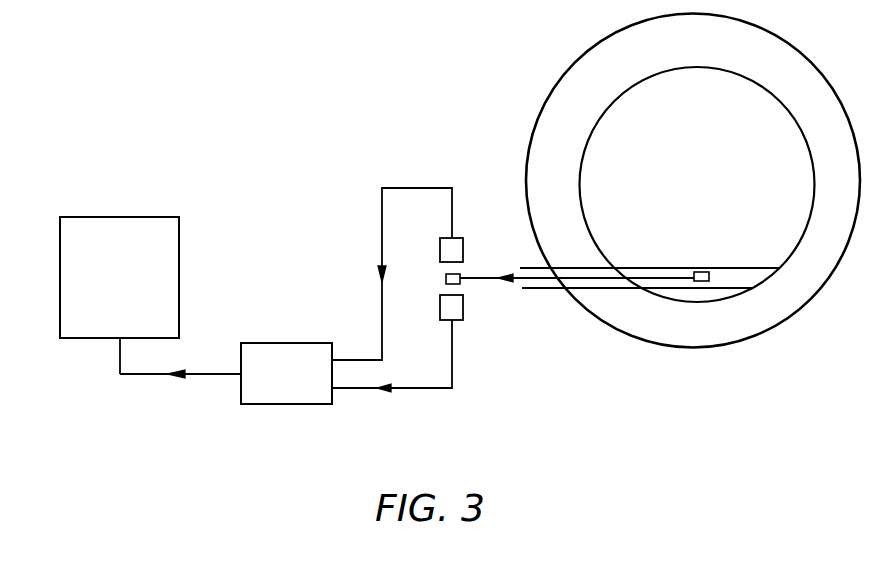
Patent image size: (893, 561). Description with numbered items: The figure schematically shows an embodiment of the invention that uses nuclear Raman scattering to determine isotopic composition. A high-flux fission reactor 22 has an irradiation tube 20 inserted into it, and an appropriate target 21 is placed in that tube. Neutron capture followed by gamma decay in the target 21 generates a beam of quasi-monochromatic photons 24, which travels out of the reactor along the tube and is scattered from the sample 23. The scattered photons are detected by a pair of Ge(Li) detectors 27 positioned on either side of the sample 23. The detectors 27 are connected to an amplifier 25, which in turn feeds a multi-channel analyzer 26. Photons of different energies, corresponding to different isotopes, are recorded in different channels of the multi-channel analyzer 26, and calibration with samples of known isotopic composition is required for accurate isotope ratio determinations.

The irradiation tube 20 is at (528, 290).
The target 21 is at (714, 272).
The high-flux fission reactor 22 is at (596, 44).
The sample 23 is at (460, 275).
The beam of quasi-monochromatic photons 24 is at (478, 281).
The amplifier 25 is at (268, 343).
The multi-channel analyzer 26 is at (60, 307).
The Ge(Li) detectors 27 is at (440, 250).